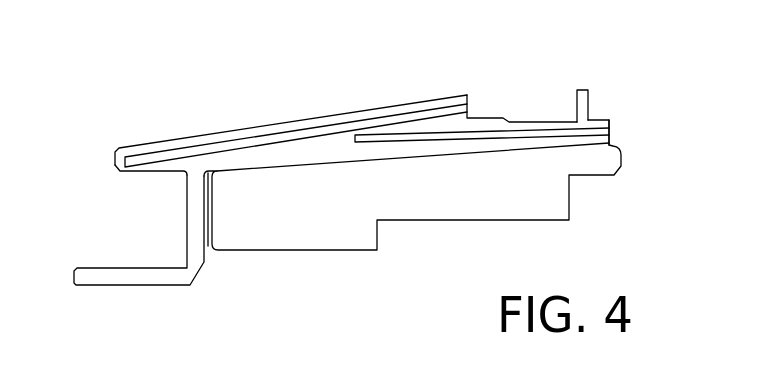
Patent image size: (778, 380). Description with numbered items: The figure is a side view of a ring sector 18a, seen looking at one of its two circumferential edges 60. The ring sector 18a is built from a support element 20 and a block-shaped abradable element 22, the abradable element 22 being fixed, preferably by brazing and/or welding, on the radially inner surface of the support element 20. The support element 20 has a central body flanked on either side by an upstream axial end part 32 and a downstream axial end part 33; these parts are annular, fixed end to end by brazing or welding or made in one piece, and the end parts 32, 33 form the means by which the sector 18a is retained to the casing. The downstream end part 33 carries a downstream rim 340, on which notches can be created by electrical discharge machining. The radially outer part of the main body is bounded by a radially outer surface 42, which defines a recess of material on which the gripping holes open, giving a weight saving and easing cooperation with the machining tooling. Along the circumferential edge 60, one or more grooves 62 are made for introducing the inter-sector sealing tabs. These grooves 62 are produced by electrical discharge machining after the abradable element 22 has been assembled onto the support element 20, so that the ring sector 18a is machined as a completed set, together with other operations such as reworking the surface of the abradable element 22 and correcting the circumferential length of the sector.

The ring sector 18a is at (298, 84).
The support element 20 is at (232, 125).
The abradable element 22 is at (483, 224).
The upstream axial end part 32 is at (130, 293).
The downstream axial end part 33 is at (541, 96).
The downstream rim 340 is at (583, 89).
The radially outer surface 42 is at (160, 138).
The circumferential edge 60 is at (157, 168).
The grooves 62 is at (193, 150).